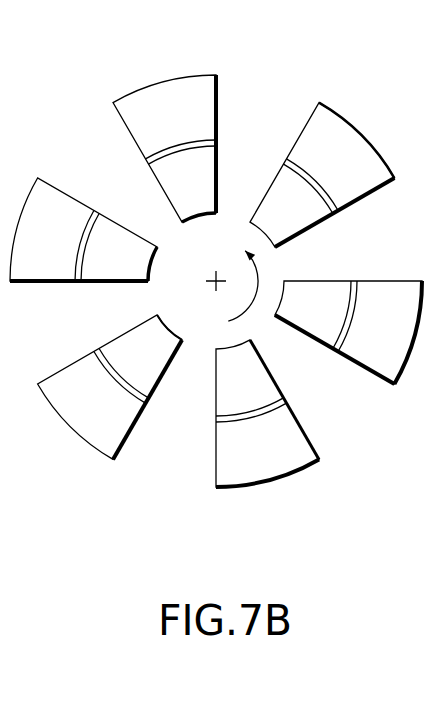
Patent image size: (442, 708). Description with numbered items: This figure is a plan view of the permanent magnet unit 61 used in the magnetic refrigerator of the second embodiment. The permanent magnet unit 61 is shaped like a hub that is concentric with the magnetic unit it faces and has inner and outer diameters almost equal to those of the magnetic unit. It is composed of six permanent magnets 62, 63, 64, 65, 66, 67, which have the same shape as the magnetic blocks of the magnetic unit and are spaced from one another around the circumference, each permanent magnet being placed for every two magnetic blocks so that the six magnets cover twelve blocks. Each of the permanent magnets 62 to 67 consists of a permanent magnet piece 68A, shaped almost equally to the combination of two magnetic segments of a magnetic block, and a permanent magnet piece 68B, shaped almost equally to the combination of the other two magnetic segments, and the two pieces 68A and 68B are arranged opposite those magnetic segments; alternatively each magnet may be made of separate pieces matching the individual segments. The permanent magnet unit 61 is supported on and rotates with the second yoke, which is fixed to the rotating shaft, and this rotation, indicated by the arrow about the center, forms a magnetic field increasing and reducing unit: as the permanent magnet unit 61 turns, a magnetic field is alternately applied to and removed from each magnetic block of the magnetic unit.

The permanent magnet unit 61 is at (252, 53).
The permanent magnet 62 is at (370, 137).
The permanent magnet 63 is at (166, 78).
The permanent magnet 64 is at (43, 285).
The permanent magnet 65 is at (88, 450).
The permanent magnet 66 is at (278, 485).
The permanent magnet 67 is at (408, 381).
The permanent magnet piece 68A is at (172, 203).
The permanent magnet piece 68B is at (218, 115).